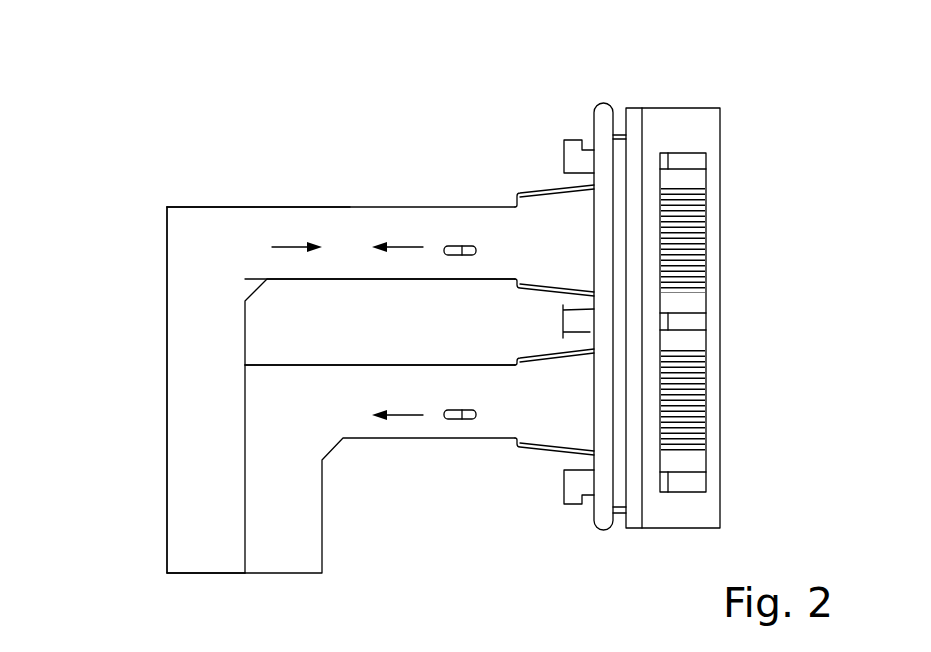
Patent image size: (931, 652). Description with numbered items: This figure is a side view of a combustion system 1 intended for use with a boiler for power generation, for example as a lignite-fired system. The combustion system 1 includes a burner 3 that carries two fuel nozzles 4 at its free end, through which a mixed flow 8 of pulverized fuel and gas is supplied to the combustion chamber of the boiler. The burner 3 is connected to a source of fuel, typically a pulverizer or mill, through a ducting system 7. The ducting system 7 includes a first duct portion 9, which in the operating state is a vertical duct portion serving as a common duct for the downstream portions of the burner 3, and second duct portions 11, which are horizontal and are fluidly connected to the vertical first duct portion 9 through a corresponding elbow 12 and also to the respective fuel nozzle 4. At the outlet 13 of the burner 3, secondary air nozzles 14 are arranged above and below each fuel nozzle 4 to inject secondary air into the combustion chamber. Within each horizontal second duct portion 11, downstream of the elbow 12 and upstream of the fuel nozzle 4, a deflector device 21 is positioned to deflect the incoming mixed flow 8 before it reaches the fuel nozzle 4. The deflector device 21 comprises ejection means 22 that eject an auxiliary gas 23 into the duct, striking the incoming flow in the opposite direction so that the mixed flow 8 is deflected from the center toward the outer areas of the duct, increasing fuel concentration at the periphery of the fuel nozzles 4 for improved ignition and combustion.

The combustion system 1 is at (108, 117).
The burner 3 is at (233, 187).
The fuel nozzle 4 is at (540, 210).
The ducting system 7 is at (148, 318).
The mixed flow of fuel and gas 8 is at (285, 247).
The first duct portion 9 is at (183, 528).
The second duct portion 11 is at (360, 227).
The elbow 12 is at (185, 227).
The outlet 13 is at (713, 470).
The secondary air nozzle 14 is at (578, 150).
The deflector device 21 is at (455, 232).
The ejection means 22 is at (463, 437).
The auxiliary gas 23 is at (410, 250).